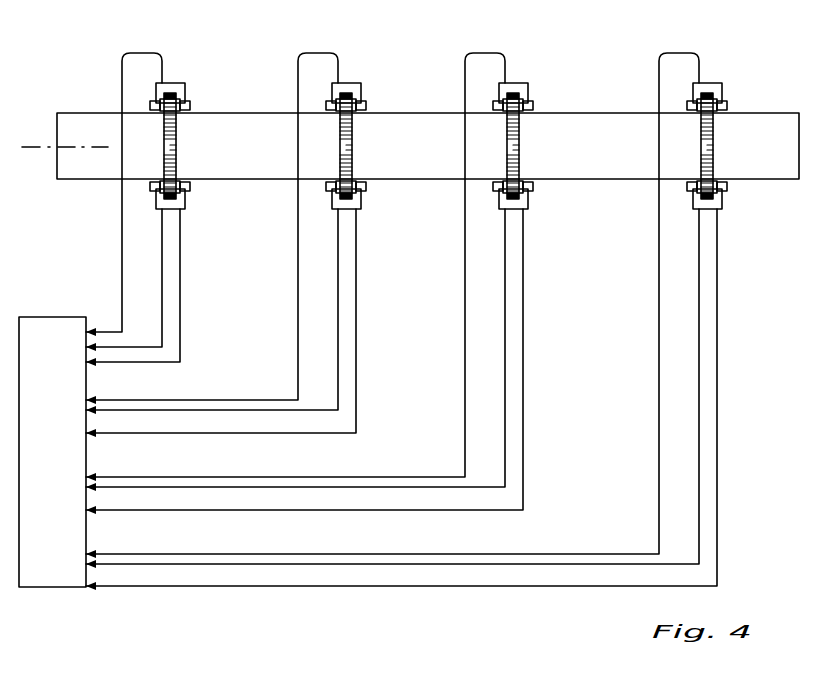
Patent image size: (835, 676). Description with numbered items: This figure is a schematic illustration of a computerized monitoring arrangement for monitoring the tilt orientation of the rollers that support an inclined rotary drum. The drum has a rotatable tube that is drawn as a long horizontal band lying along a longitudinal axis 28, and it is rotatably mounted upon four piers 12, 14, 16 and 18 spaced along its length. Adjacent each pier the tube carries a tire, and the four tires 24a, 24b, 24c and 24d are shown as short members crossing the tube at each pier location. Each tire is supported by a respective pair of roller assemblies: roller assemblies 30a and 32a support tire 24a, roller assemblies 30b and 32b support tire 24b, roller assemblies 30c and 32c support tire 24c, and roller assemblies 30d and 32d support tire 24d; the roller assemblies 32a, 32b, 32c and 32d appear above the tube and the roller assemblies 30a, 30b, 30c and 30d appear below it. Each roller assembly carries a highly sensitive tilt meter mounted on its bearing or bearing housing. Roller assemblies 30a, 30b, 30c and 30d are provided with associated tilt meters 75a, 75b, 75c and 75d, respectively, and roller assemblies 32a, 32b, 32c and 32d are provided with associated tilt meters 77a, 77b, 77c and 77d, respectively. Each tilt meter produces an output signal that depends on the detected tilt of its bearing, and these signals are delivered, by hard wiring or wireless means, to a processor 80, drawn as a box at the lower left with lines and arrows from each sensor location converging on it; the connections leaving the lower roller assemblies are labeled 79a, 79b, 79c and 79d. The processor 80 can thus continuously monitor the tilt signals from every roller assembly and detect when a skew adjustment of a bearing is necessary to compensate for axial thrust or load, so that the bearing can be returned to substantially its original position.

The pier 12 is at (163, 191).
The pier 14 is at (258, 230).
The pier 16 is at (343, 269).
The pier 18 is at (439, 311).
The longitudinal axis 28 is at (32, 147).
The processor 80 is at (65, 467).
The tire 24a is at (177, 146).
The tire 24b is at (353, 146).
The tire 24c is at (520, 146).
The tire 24d is at (714, 146).
The roller assembly 32a is at (197, 92).
The roller assembly 32b is at (370, 92).
The roller assembly 32c is at (537, 92).
The roller assembly 32d is at (729, 95).
The roller assembly 30a is at (198, 190).
The roller assembly 30b is at (372, 195).
The roller assembly 30c is at (541, 190).
The roller assembly 30d is at (735, 193).
The tilt meter 77a is at (154, 100).
The tilt meter 77b is at (331, 100).
The tilt meter 77c is at (500, 102).
The tilt meter 77d is at (692, 100).
The tilt meter 75a is at (155, 194).
The tilt meter 75b is at (333, 207).
The tilt meter 75c is at (500, 208).
The tilt meter 75d is at (690, 210).
The sensor lead wires 79a is at (178, 207).
The sensor lead wires 79b is at (354, 210).
The sensor lead wires 79c is at (521, 210).
The sensor lead wires 79d is at (716, 210).